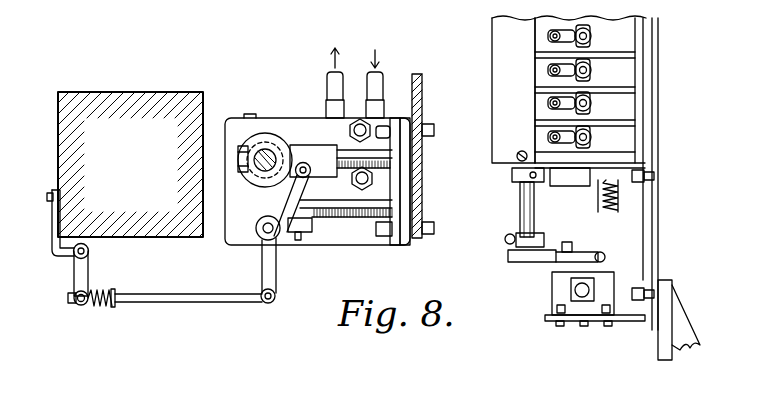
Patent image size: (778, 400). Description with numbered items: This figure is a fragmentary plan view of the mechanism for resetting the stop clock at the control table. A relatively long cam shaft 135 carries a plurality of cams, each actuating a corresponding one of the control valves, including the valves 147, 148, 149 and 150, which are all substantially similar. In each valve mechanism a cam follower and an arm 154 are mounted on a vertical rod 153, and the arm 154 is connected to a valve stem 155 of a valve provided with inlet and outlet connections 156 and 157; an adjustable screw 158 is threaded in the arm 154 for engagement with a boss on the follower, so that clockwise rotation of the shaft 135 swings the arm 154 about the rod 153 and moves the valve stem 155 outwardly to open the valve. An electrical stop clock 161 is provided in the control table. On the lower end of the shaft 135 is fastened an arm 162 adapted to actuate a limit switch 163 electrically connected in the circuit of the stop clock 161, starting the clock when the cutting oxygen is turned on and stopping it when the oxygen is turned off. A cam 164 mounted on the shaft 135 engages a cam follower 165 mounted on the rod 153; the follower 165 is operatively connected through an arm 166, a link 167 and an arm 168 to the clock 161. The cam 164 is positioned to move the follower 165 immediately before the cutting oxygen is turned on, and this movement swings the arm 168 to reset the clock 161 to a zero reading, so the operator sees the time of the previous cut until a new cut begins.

The cam shaft 135 is at (268, 148).
The valve 147 is at (628, 24).
The valve 148 is at (628, 68).
The valve 149 is at (628, 100).
The valve 150 is at (628, 132).
The vertical rod 153 is at (234, 240).
The arm 154 is at (546, 74).
The valve stem 155 is at (592, 70).
The inlet connection 156 is at (380, 84).
The outlet connection 157 is at (338, 84).
The adjustable screw 158 is at (552, 40).
The electrical stop clock 161 is at (127, 125).
The arm 162 is at (522, 263).
The limit switch 163 is at (556, 290).
The cam 164 is at (284, 140).
The cam follower 165 is at (282, 204).
The arm 166 is at (262, 273).
The link 167 is at (190, 300).
The arm 168 is at (70, 271).